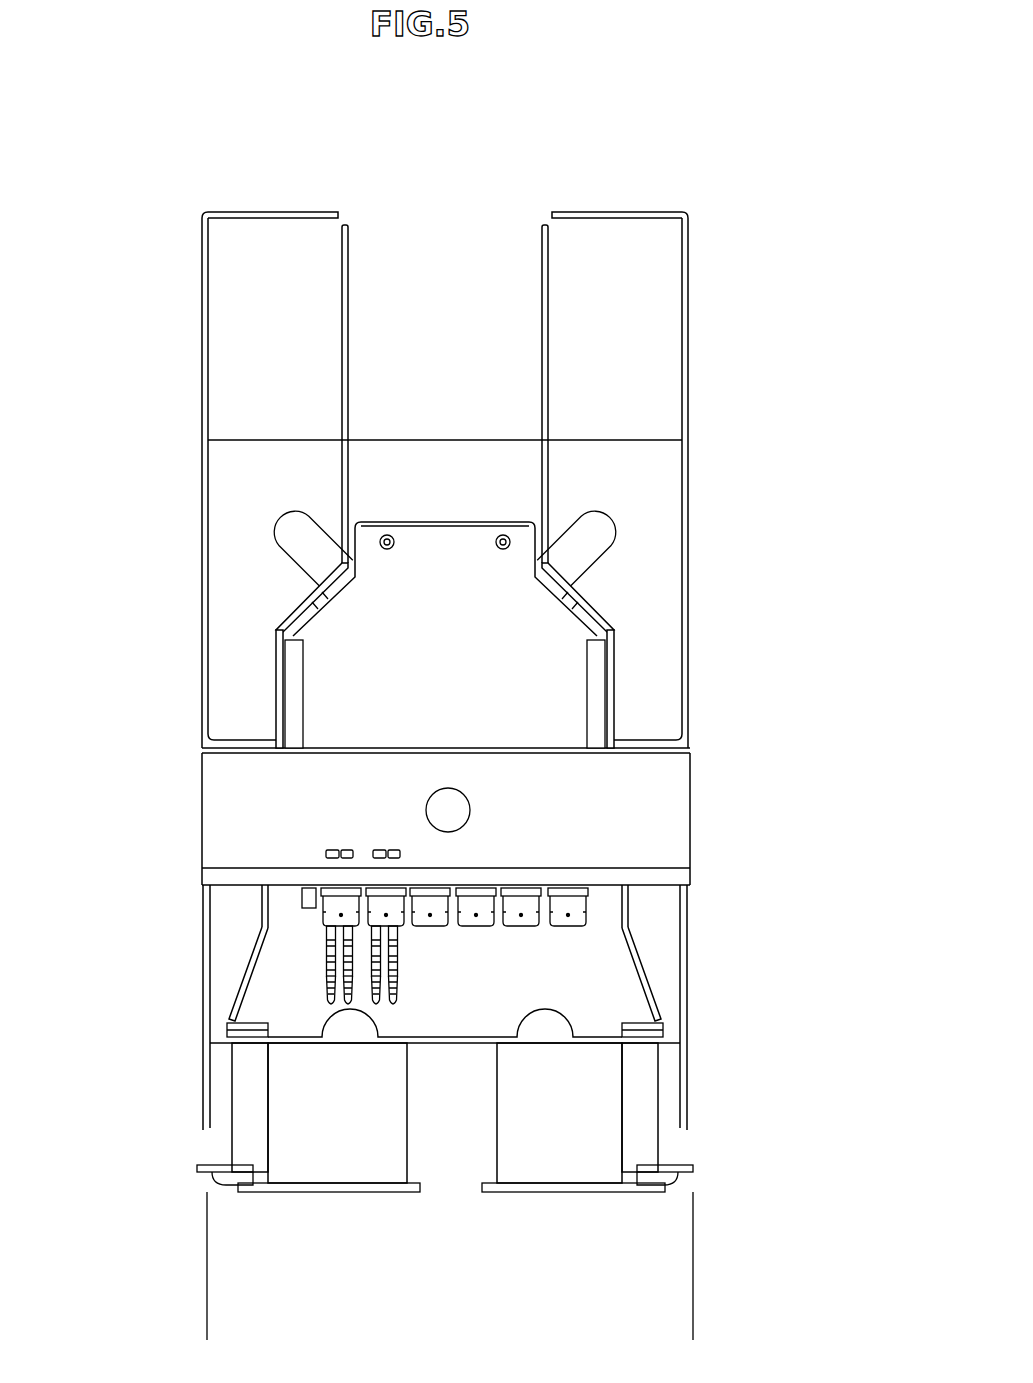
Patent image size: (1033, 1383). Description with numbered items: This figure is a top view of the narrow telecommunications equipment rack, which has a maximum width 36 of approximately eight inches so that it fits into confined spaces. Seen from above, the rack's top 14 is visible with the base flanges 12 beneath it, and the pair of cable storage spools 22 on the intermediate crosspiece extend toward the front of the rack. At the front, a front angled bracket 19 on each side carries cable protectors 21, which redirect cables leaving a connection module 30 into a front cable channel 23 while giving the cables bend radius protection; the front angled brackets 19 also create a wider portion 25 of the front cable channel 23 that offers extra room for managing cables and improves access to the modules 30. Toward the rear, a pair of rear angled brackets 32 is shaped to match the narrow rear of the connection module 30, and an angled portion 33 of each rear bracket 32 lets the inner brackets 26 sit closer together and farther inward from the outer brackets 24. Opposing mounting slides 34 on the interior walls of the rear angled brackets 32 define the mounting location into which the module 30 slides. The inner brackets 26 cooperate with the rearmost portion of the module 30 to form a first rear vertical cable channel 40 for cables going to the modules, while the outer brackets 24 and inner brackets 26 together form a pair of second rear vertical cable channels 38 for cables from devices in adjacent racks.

The flange 12 is at (270, 477).
The top 14 is at (276, 825).
The front angled bracket 19 is at (243, 975).
The cable protector 21 is at (248, 1125).
The cable storage spool 22 is at (318, 1152).
The front cable channel 23 is at (207, 1021).
The outer bracket 24 is at (248, 210).
The wider portion 25 is at (240, 912).
The inner bracket 26 is at (347, 273).
The connection module 30 is at (422, 660).
The rear angled bracket 32 is at (275, 683).
The angled portion 33 is at (288, 612).
The mounting slide 34 is at (295, 700).
The maximum width 36 is at (208, 1317).
The second rear vertical cable channel 38 is at (272, 317).
The first rear vertical cable channel 40 is at (432, 325).